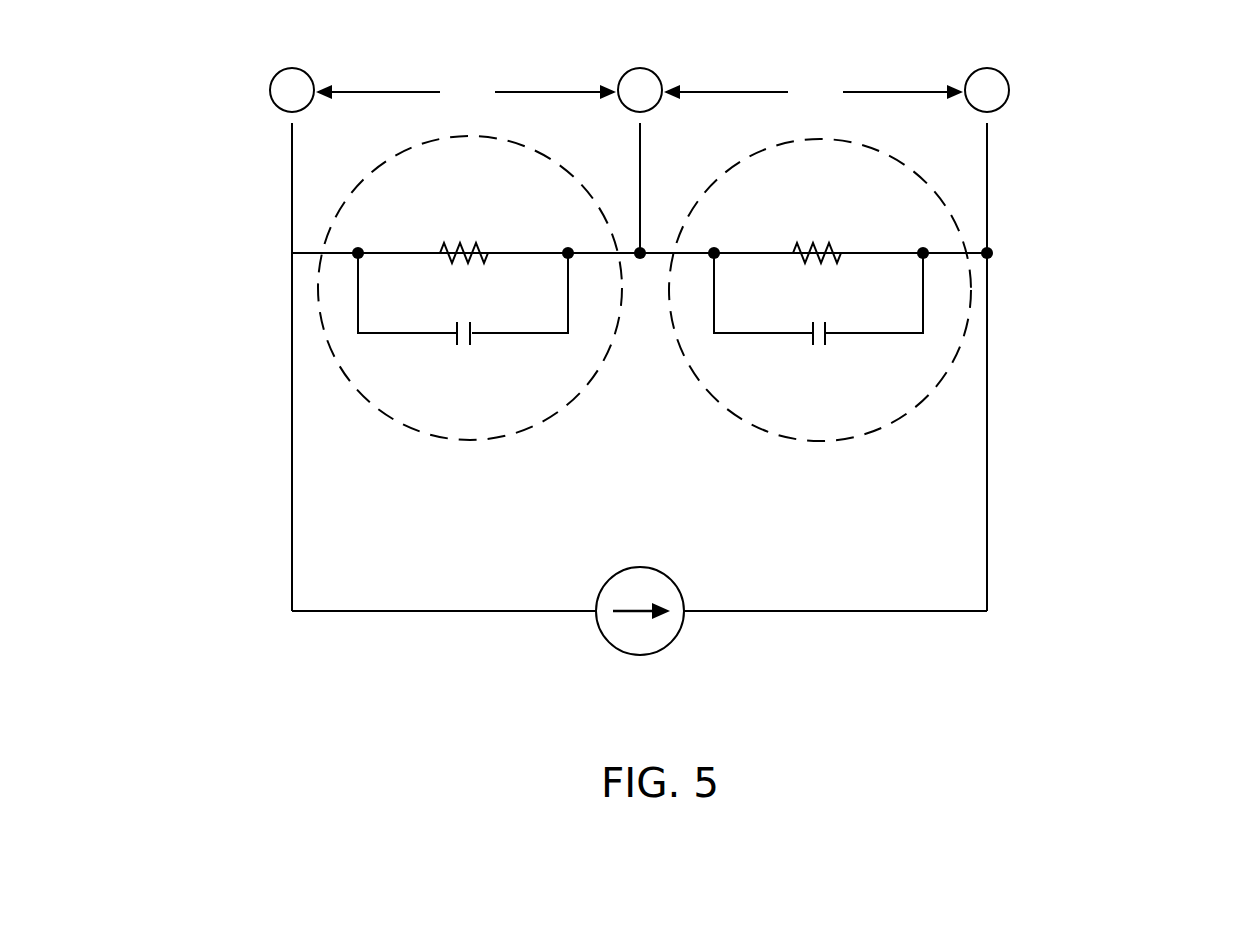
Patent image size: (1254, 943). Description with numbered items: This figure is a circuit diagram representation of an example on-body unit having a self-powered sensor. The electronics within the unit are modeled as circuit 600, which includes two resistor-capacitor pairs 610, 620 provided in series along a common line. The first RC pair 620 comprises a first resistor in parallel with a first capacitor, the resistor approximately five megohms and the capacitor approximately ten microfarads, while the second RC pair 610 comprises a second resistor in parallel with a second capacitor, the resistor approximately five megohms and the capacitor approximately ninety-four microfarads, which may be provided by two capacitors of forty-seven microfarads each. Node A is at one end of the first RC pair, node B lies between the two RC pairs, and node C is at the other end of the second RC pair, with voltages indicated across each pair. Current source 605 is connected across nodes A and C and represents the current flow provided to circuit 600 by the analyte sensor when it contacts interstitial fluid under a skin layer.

The circuit 600 is at (1150, 219).
The current source 605 is at (652, 570).
The second RC pair 610 is at (940, 205).
The first RC pair 620 is at (335, 213).